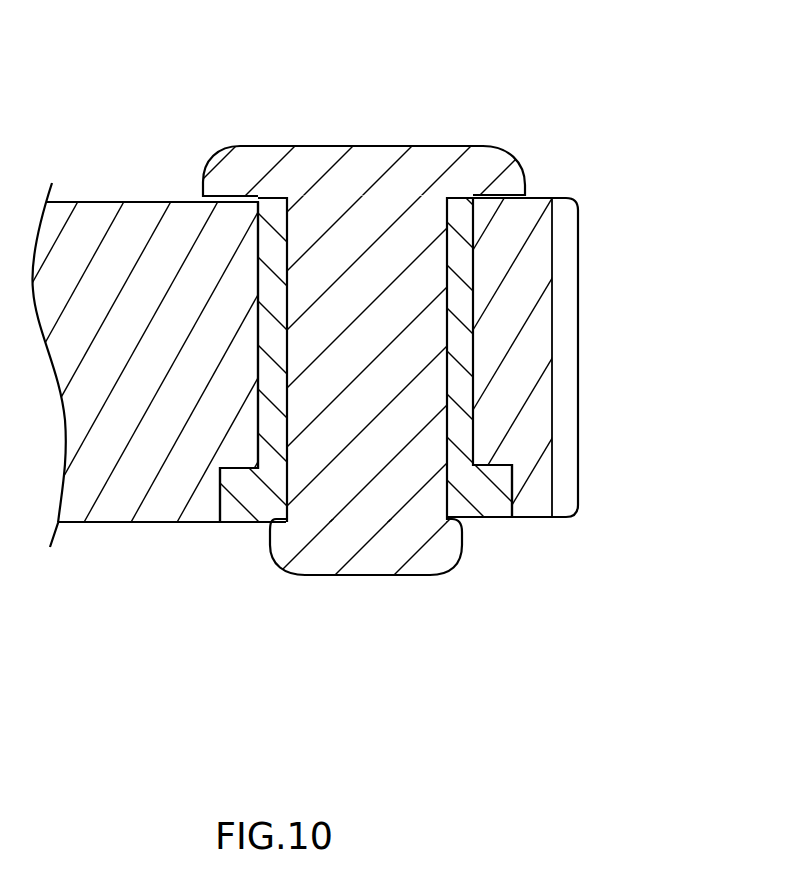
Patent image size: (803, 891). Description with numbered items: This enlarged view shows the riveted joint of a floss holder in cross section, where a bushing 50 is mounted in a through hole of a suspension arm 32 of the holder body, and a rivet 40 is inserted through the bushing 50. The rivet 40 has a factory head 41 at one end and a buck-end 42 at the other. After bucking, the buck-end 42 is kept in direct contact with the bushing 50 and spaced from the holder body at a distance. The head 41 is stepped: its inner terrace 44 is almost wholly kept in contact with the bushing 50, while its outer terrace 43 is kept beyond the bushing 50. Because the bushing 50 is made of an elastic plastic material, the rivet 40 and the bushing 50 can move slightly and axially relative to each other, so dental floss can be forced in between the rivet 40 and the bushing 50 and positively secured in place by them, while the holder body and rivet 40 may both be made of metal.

The suspension arm 32 is at (120, 235).
The rivet 40 is at (272, 105).
The head 41 is at (362, 146).
The buck-end 42 is at (326, 574).
The outer terrace 43 is at (508, 193).
The inner terrace 44 is at (453, 197).
The bushing 50 is at (463, 440).